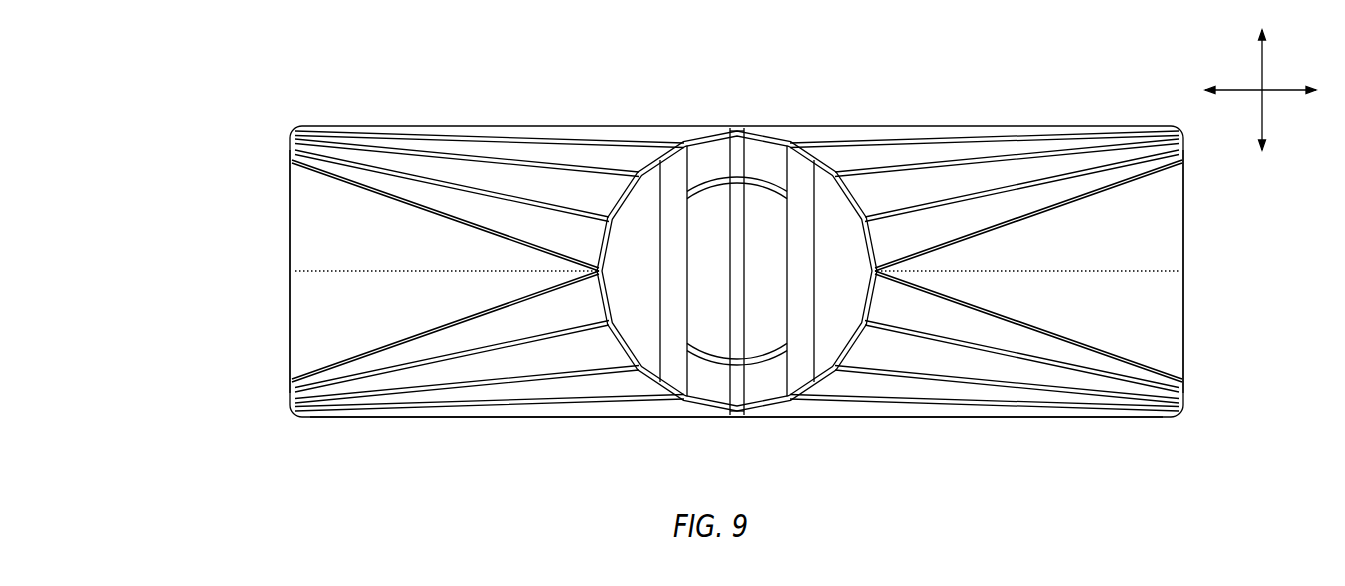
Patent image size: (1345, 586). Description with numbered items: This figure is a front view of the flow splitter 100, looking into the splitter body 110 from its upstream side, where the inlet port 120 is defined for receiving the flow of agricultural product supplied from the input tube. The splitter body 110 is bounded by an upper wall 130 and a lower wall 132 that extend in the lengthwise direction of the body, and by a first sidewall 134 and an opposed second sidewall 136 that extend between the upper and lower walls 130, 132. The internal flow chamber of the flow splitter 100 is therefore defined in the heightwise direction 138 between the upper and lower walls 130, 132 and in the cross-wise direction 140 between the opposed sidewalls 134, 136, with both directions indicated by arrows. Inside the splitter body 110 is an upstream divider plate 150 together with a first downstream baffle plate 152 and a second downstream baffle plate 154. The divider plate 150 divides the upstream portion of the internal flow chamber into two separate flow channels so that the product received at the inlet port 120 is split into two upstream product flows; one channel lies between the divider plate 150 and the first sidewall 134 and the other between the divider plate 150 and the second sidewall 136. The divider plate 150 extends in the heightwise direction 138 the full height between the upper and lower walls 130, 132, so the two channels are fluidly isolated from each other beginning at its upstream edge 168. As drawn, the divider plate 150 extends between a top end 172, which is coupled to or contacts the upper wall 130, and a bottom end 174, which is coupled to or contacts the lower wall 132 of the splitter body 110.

The flow splitter 100 is at (150, 105).
The splitter body 110 is at (327, 122).
The inlet port 120 is at (623, 355).
The upper wall 130 is at (658, 128).
The lower wall 132 is at (812, 418).
The first sidewall 134 is at (298, 253).
The second sidewall 136 is at (1165, 237).
The heightwise direction 138 is at (1265, 75).
The cross-wise direction 140 is at (1238, 88).
The upstream divider plate 150 is at (715, 330).
The first downstream baffle plate 152 is at (655, 215).
The second downstream baffle plate 154 is at (815, 218).
The upstream edge 168 is at (738, 275).
The top end 172 is at (733, 133).
The bottom end 174 is at (739, 416).